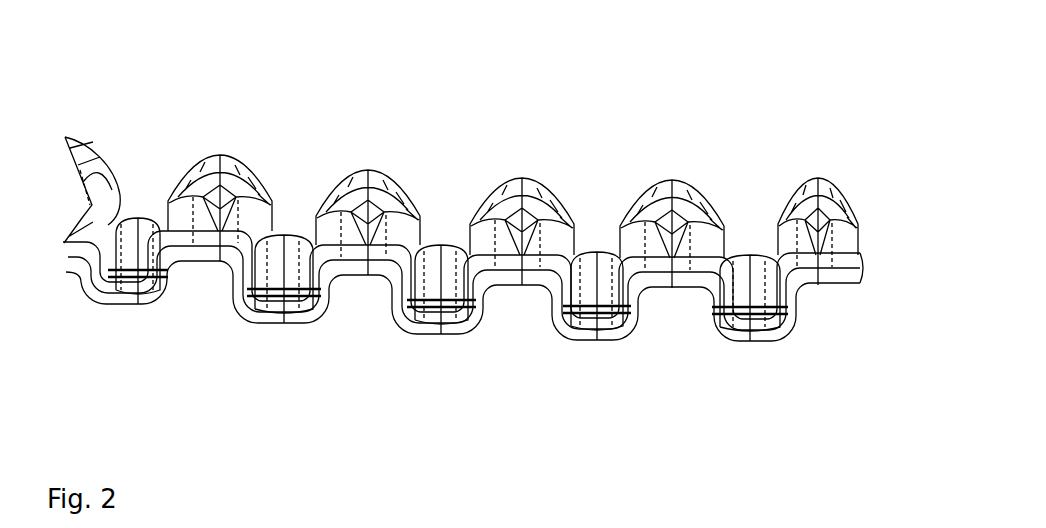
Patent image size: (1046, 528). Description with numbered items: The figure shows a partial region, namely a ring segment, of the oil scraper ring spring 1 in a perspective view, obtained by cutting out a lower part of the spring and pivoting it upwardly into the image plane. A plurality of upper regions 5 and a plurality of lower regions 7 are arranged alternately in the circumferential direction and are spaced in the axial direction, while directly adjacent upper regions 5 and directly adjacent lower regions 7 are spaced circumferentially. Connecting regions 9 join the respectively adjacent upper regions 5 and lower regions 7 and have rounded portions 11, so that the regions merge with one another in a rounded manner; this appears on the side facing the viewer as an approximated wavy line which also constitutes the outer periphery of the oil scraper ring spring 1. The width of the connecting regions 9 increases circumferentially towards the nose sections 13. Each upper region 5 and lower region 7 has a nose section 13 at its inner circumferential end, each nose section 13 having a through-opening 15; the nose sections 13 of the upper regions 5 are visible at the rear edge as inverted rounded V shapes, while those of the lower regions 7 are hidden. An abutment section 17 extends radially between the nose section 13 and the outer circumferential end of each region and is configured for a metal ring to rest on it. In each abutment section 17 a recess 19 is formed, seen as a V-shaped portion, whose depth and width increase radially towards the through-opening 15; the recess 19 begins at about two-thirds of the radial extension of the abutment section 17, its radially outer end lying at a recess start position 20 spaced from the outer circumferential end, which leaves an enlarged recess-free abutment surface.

The oil scraper ring spring 1 is at (217, 121).
The upper region 5 is at (686, 282).
The lower region 7 is at (747, 333).
The connecting region 9 is at (703, 298).
The rounded portion 11 is at (712, 327).
The nose section 13 is at (690, 205).
The through-opening 15 is at (658, 205).
The abutment section 17 is at (636, 214).
The recess 19 is at (695, 220).
The recess start position 20 is at (684, 260).